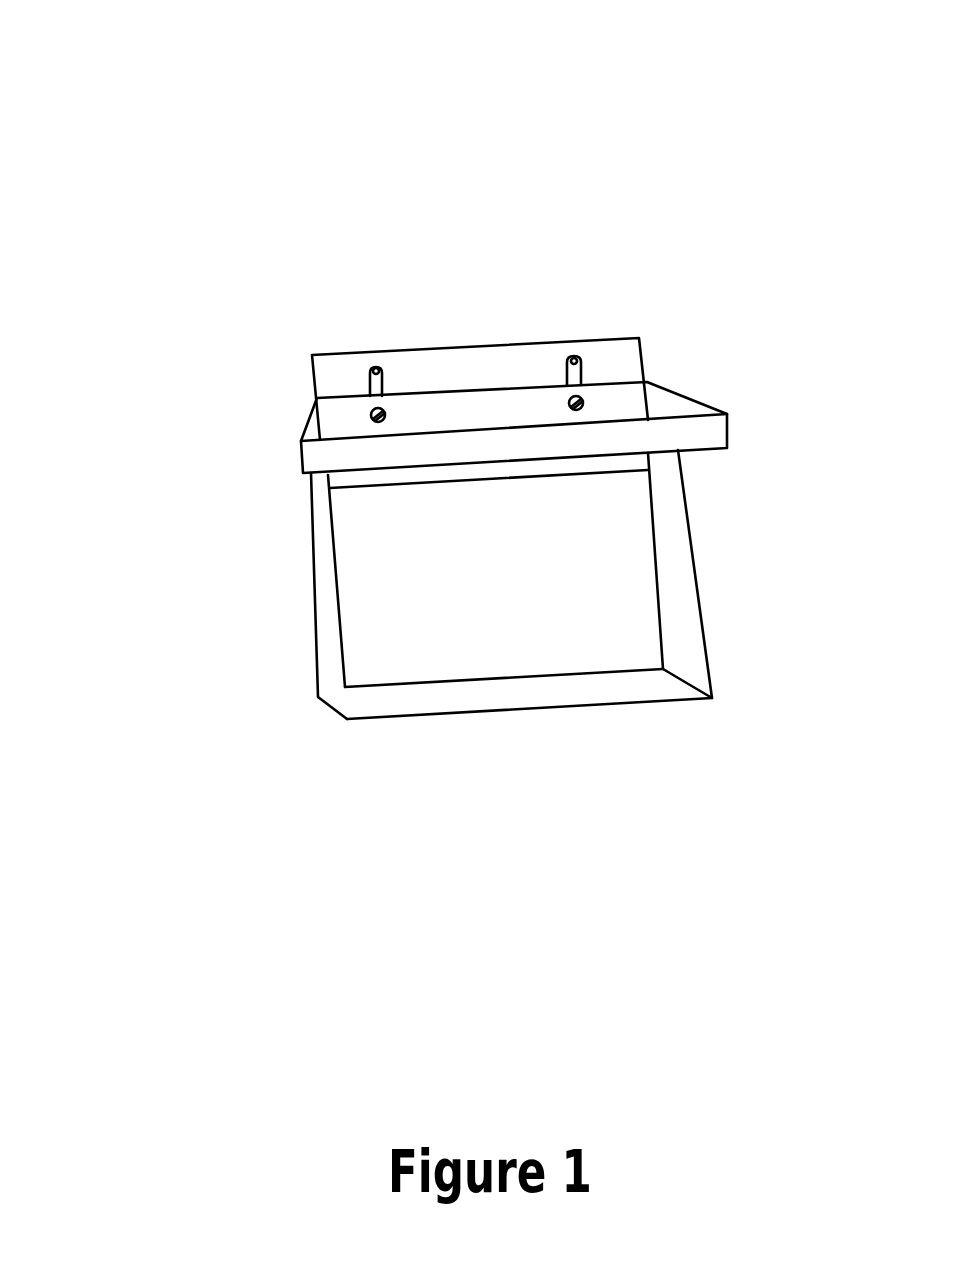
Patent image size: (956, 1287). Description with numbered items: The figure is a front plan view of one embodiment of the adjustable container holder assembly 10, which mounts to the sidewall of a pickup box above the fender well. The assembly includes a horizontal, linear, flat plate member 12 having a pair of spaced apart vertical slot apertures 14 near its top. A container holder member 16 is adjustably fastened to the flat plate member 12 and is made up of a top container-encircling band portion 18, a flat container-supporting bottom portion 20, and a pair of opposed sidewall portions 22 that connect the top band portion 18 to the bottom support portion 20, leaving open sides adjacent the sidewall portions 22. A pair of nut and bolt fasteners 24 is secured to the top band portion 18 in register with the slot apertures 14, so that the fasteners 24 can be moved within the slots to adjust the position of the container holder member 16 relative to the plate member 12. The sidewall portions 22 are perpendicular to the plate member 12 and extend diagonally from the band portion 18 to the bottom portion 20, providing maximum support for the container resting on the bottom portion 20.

The adjustable container holder assembly 10 is at (238, 100).
The flat plate member 12 is at (478, 368).
The vertical slot apertures 14 is at (376, 367).
The container holder member 16 is at (441, 629).
The top container-encircling band portion 18 is at (317, 458).
The container-supporting bottom portion 20 is at (512, 695).
The opposed sidewall portions 22 is at (330, 648).
The nut and bolt fasteners 24 is at (372, 410).